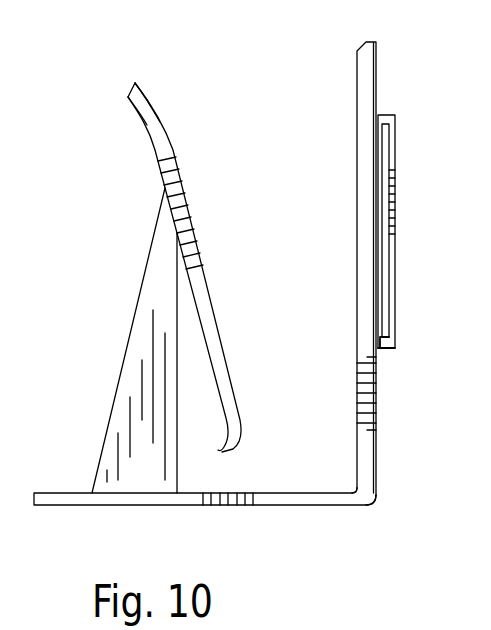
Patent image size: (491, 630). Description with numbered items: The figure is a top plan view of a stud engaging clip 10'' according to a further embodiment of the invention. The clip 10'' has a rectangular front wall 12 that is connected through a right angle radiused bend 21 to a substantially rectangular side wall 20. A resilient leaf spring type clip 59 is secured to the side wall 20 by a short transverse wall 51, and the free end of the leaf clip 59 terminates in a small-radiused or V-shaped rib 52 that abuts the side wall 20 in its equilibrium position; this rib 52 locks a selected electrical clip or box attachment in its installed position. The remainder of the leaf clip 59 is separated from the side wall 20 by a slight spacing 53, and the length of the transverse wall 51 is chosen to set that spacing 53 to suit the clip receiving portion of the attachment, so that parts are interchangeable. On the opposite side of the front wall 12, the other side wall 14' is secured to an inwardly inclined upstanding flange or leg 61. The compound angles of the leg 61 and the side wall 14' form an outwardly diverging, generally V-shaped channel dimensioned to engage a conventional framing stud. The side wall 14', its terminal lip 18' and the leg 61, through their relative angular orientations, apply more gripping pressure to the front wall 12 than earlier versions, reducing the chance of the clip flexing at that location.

The stud engaging clip 10'' is at (131, 41).
The front wall 12 is at (285, 507).
The side wall 14' is at (210, 267).
The terminal lip 18' is at (192, 105).
The side wall 20 is at (357, 218).
The right angle radiused bend 21 is at (372, 507).
The transverse wall 51 is at (387, 117).
The rib 52 is at (383, 340).
The spacing 53 is at (382, 152).
The resilient leaf spring type clip 59 is at (390, 235).
The upstanding flange or leg 61 is at (127, 366).